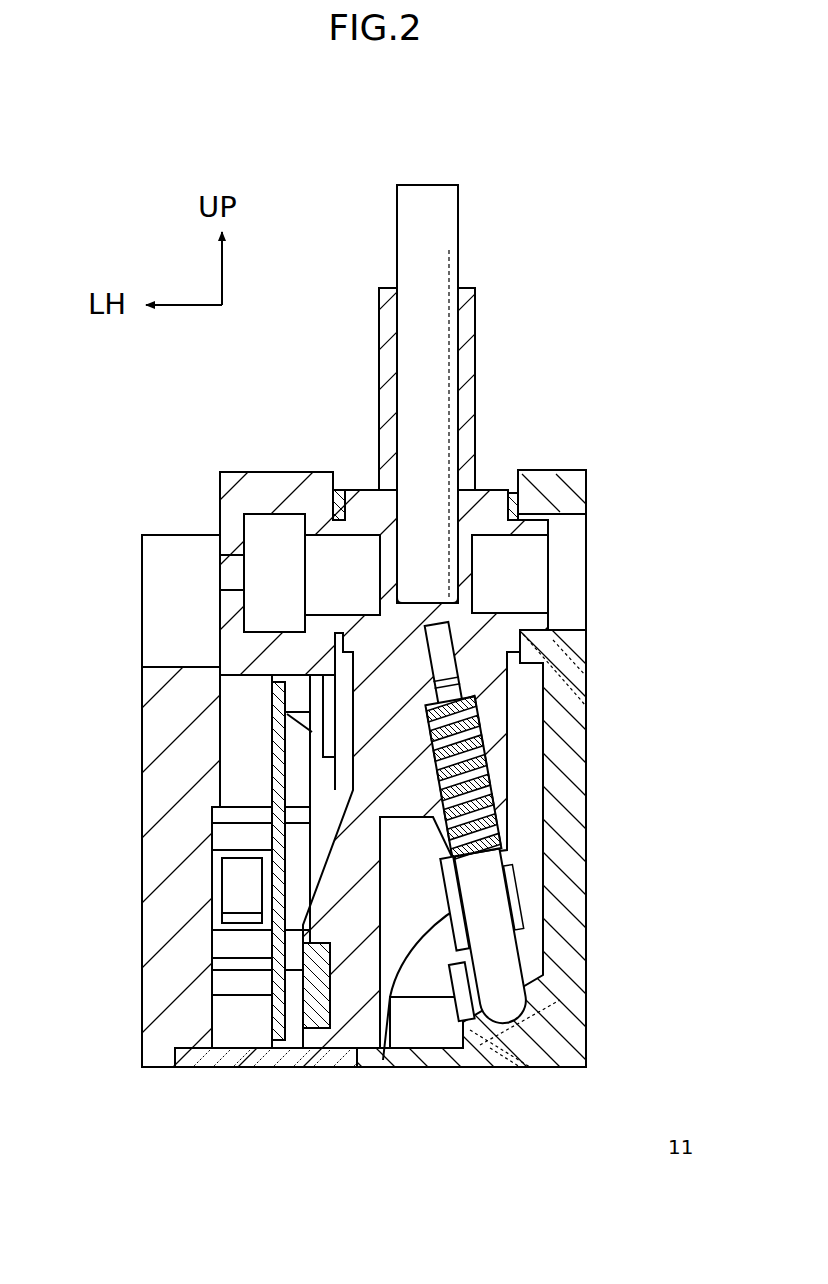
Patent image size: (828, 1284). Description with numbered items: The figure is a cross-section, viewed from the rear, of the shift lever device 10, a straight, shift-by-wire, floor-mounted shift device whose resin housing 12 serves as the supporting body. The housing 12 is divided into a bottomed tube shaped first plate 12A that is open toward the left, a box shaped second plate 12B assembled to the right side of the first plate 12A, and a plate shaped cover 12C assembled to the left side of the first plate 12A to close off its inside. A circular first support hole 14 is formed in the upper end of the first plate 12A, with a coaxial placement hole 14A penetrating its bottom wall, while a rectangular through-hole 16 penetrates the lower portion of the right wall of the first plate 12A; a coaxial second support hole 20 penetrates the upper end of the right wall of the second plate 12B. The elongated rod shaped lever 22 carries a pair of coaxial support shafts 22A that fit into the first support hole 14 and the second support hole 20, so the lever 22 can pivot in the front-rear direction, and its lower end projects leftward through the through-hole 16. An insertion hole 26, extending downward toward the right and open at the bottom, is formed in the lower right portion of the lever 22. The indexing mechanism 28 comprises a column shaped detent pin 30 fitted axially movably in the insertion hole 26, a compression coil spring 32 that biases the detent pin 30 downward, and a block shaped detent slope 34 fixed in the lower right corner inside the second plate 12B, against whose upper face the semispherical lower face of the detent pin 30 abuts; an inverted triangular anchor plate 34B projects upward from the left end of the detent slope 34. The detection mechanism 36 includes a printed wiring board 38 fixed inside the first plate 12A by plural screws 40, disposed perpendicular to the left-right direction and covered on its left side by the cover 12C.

The shift lever device 10 is at (557, 300).
The housing 12 is at (222, 471).
The first plate 12A is at (216, 520).
The second plate 12B is at (588, 745).
The cover 12C is at (142, 770).
The first support hole 14 is at (268, 520).
The placement hole 14A is at (232, 572).
The through-hole 16 is at (312, 770).
The second support hole 20 is at (575, 520).
The lever 22 is at (383, 287).
The support shafts 22A is at (336, 495).
The insertion hole 26 is at (462, 896).
The indexing mechanism 28 is at (568, 878).
The detent pin 30 is at (530, 935).
The compression coil spring 32 is at (497, 790).
The detent slope 34 is at (548, 975).
The anchor plate 34B is at (452, 1000).
The detection mechanism 36 is at (273, 918).
The printed wiring board 38 is at (267, 1015).
The screws 40 is at (293, 1015).